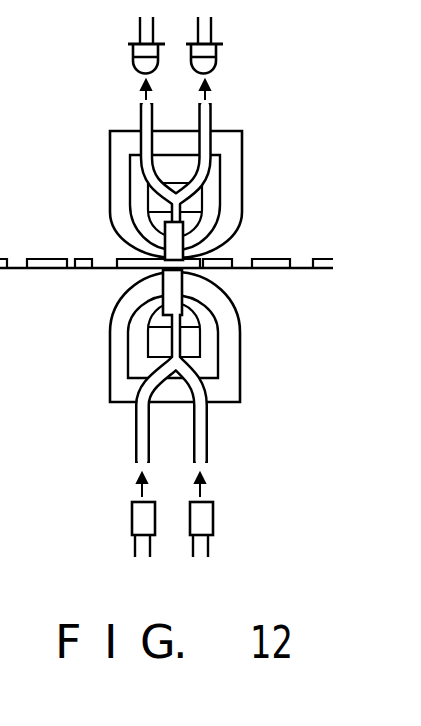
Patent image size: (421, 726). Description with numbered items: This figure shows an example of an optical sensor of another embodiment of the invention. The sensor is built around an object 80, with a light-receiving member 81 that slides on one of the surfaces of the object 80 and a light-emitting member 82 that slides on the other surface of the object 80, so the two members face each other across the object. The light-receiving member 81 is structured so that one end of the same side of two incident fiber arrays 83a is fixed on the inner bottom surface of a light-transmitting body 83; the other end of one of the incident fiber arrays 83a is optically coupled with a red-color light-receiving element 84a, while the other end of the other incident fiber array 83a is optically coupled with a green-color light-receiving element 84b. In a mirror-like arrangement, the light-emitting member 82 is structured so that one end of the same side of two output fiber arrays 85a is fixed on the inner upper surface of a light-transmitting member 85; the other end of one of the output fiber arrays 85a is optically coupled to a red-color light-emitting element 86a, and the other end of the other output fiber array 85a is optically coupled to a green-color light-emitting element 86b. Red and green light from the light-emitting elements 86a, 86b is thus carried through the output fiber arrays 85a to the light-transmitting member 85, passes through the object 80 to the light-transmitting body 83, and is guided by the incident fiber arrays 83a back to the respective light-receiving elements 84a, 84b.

The object 80 is at (330, 269).
The light-receiving member 81 is at (242, 178).
The light-emitting member 82 is at (241, 372).
The light-transmitting body 83 is at (170, 238).
The incident fiber arrays 83a is at (140, 112).
The red-color light-receiving element 84a is at (133, 56).
The green-color light-receiving element 84b is at (216, 55).
The light-transmitting member 85 is at (183, 298).
The output fiber arrays 85a is at (140, 444).
The red-color light-emitting element 86a is at (132, 524).
The green-color light-emitting element 86b is at (213, 524).